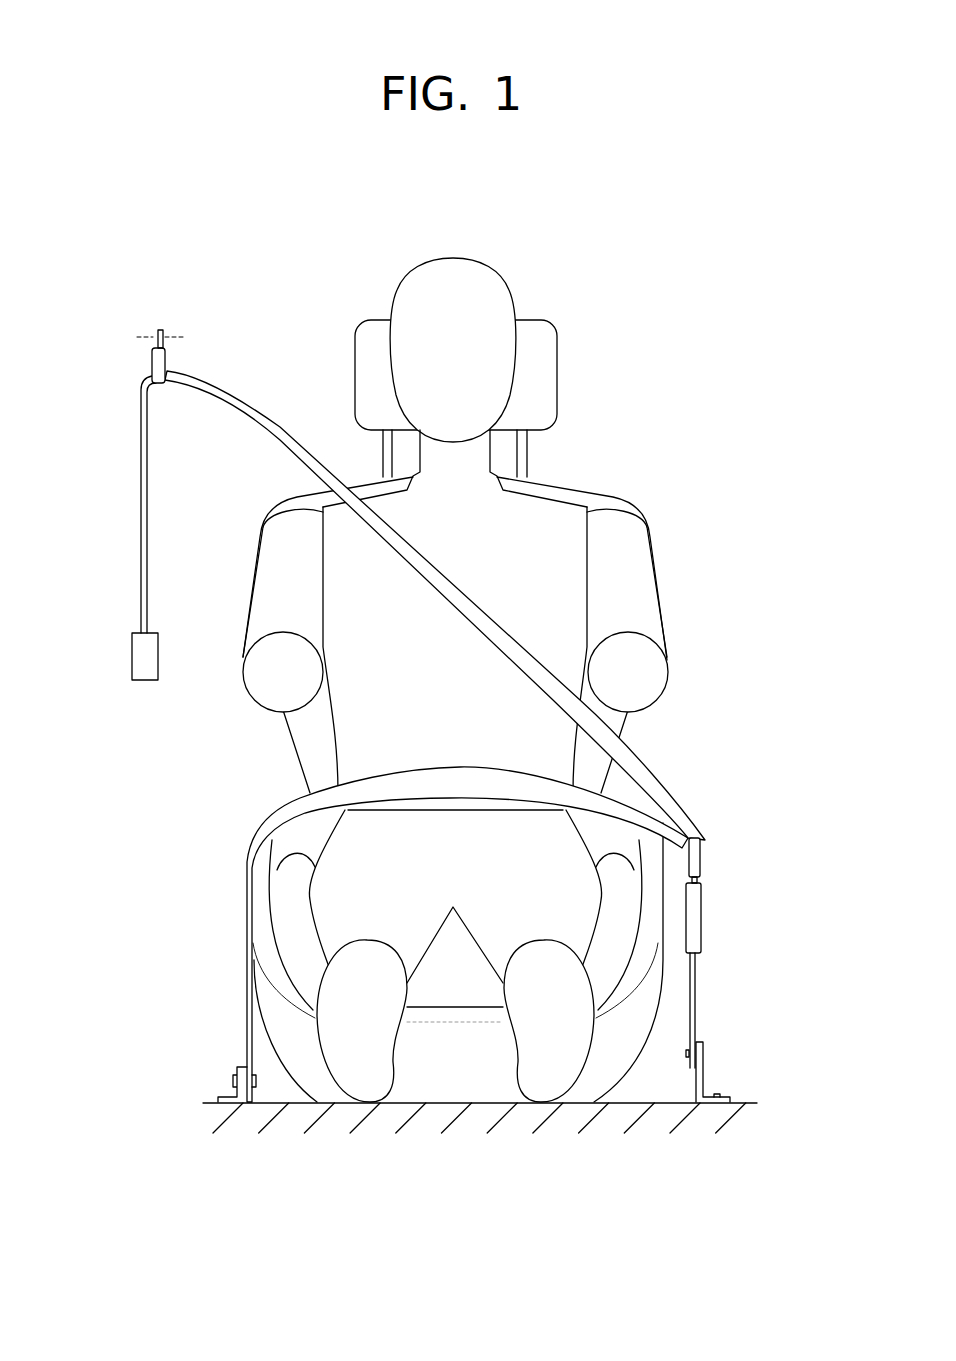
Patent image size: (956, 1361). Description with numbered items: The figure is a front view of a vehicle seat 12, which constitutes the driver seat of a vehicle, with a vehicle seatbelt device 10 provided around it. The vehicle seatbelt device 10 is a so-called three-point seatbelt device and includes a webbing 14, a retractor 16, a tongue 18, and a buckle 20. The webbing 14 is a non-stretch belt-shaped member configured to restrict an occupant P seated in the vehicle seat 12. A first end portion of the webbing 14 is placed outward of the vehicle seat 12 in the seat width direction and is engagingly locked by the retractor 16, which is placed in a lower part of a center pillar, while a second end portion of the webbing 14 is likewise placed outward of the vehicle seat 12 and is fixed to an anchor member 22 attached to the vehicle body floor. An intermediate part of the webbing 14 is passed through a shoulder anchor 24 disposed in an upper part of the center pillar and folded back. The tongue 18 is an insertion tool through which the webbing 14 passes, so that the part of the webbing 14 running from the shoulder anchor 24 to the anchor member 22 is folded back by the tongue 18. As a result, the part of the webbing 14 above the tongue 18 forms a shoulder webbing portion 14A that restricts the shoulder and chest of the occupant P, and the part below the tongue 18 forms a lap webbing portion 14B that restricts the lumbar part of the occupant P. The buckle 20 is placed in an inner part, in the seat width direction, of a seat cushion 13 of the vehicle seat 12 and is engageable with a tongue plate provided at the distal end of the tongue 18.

The vehicle seatbelt device 10 is at (722, 790).
The vehicle seat 12 is at (622, 490).
The seat cushion 13 is at (640, 1086).
The webbing 14 is at (435, 699).
The shoulder webbing portion 14A is at (487, 612).
The lap webbing portion 14B is at (428, 772).
The retractor 16 is at (131, 665).
The tongue 18 is at (702, 868).
The buckle 20 is at (703, 927).
The anchor member 22 is at (234, 1096).
The shoulder anchor 24 is at (167, 367).
The occupant P is at (500, 272).